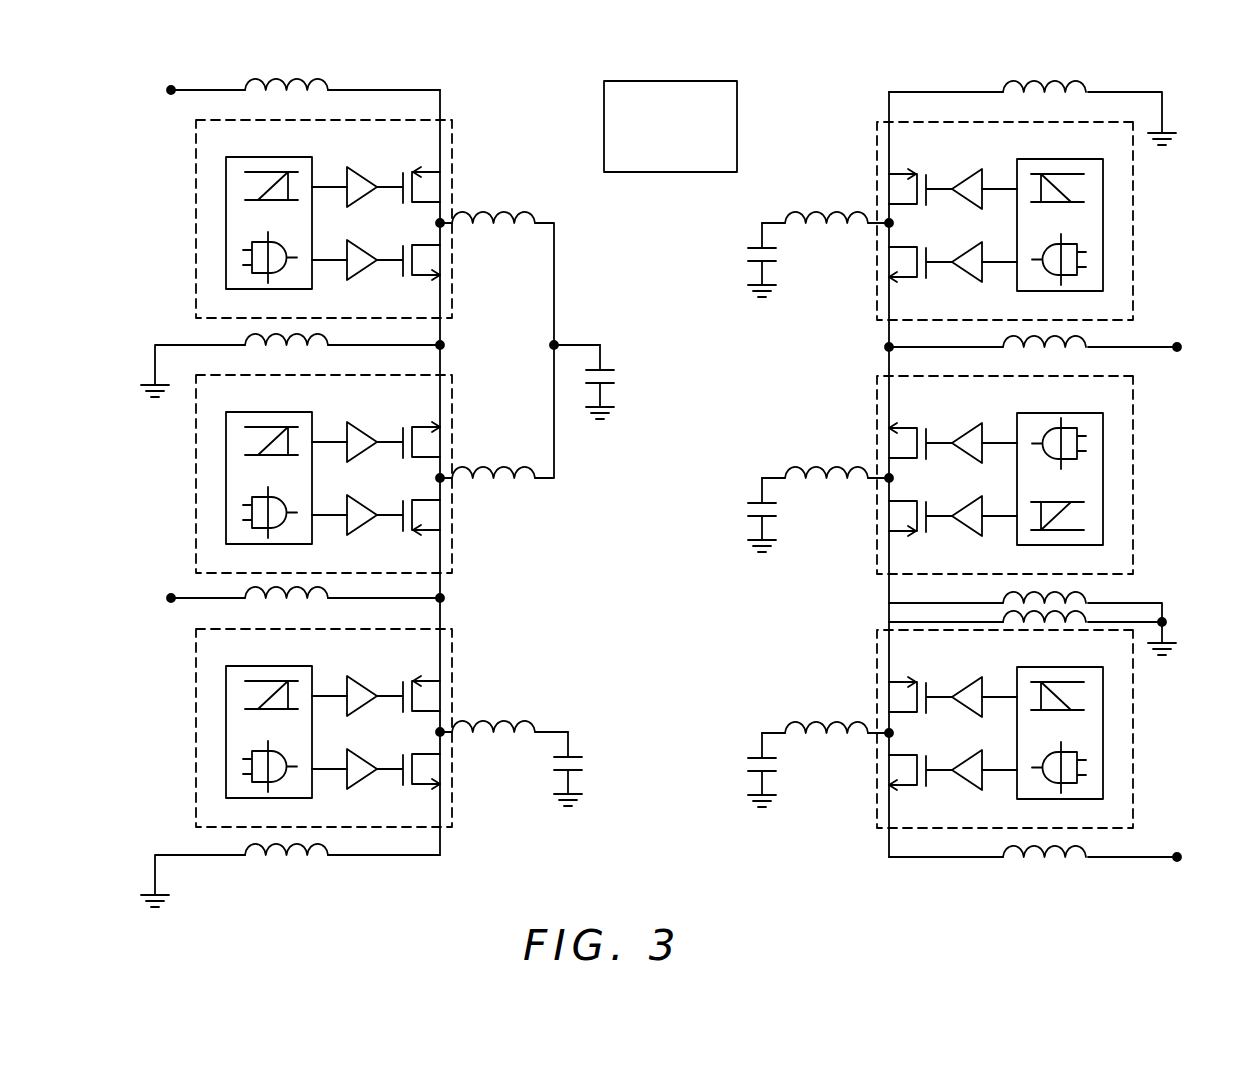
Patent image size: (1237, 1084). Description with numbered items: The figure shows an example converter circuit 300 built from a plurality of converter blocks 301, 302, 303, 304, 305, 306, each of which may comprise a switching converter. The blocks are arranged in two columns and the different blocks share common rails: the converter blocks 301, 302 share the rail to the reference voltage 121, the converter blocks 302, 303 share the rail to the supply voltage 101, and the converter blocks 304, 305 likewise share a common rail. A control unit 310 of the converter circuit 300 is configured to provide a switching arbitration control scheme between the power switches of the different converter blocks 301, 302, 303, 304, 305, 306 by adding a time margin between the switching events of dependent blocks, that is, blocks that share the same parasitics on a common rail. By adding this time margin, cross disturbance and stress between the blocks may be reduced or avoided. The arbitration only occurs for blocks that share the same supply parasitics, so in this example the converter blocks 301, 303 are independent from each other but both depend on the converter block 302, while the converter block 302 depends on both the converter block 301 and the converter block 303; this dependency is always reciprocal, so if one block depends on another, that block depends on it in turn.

The supply voltage 101 is at (171, 94).
The reference voltage 121 is at (157, 343).
The converter circuit 300 is at (673, 486).
The converter block 301 is at (455, 138).
The converter block 302 is at (455, 548).
The converter block 303 is at (455, 649).
The converter block 304 is at (877, 140).
The converter block 305 is at (877, 550).
The converter block 306 is at (877, 650).
The control unit 310 is at (672, 81).